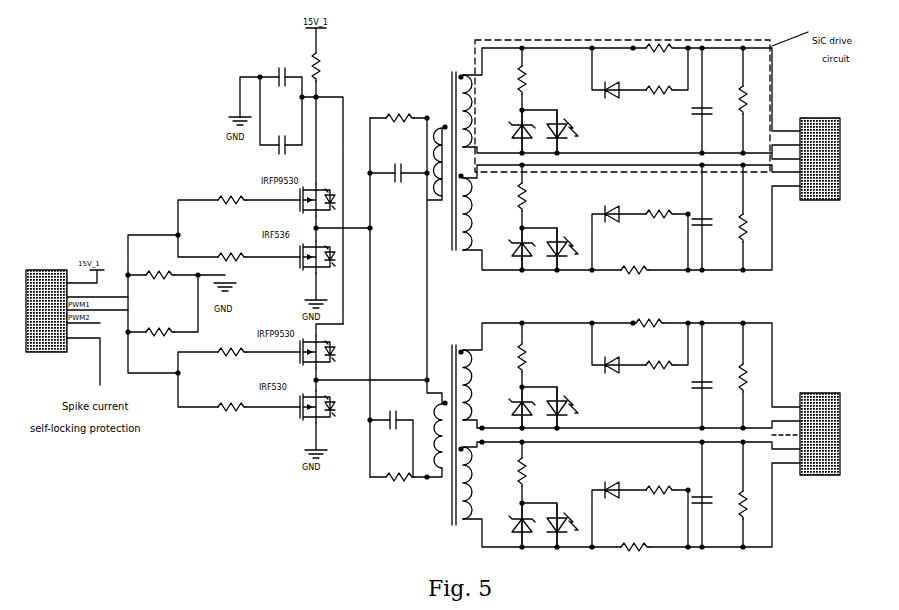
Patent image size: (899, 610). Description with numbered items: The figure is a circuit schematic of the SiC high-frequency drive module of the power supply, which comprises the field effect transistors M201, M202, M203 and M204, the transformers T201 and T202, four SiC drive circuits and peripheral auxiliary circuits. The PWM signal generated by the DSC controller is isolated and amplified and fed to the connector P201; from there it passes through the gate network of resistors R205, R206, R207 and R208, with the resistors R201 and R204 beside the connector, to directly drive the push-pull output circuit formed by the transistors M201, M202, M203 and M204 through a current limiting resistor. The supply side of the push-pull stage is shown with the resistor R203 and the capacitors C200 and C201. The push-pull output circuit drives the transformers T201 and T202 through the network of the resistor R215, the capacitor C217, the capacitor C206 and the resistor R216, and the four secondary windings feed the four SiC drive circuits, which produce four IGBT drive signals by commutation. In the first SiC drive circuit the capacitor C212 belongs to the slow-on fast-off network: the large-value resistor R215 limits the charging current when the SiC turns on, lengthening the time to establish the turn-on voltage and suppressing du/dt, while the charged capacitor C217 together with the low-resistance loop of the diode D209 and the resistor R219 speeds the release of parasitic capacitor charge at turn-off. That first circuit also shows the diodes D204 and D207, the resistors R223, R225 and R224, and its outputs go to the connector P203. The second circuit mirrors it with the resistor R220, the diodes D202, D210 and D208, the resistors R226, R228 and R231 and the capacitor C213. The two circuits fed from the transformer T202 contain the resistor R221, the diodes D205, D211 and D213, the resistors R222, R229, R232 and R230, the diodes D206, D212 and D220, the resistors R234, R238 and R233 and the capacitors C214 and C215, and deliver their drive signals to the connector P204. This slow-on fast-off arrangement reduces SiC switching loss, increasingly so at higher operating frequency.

The resistor R203 is at (327, 67).
The capacitor C200 is at (280, 69).
The electrolytic capacitor C201 is at (282, 142).
The gate resistor R205 is at (232, 195).
The gate resistor R206 is at (232, 252).
The field effect transistor M201 is at (309, 206).
The field effect transistor M202 is at (309, 260).
The resistor R201 is at (167, 270).
The resistor R204 is at (167, 327).
The gate resistor R207 is at (232, 347).
The gate resistor R208 is at (232, 402).
The field effect transistor M203 is at (309, 358).
The field effect transistor M204 is at (309, 412).
The connector P201 is at (44, 310).
The resistor R215 is at (400, 112).
The capacitor C217 is at (402, 170).
The capacitor C206 is at (390, 417).
The resistor R216 is at (397, 471).
The transformer T201 is at (454, 153).
The transformer T202 is at (454, 427).
The resistor R219 is at (533, 80).
The zener diode D204 is at (511, 131).
The diode D209 is at (567, 131).
The resistor R220 is at (533, 197).
The zener diode D202 is at (511, 249).
The transient voltage suppressor diode D210 is at (567, 249).
The resistor R223 is at (659, 42).
The diode D207 is at (613, 83).
The resistor R225 is at (660, 85).
The capacitor C212 is at (710, 104).
The resistor R224 is at (754, 100).
The diode D208 is at (613, 207).
The resistor R226 is at (660, 209).
The resistor R228 is at (634, 265).
The capacitor C213 is at (710, 215).
The resistor R231 is at (754, 228).
The output header connector P203 is at (820, 158).
The resistor R221 is at (533, 358).
The zener diode D205 is at (509, 408).
The transient voltage suppressor diode D211 is at (567, 408).
The resistor R222 is at (533, 472).
The zener diode D206 is at (510, 525).
The transient voltage suppressor diode D212 is at (567, 525).
The resistor R229 is at (649, 317).
The diode D213 is at (613, 358).
The resistor R232 is at (660, 360).
The capacitor C214 is at (710, 378).
The resistor R230 is at (754, 378).
The diode D220 is at (613, 483).
The resistor R234 is at (660, 485).
The resistor R238 is at (635, 542).
The capacitor C215 is at (710, 492).
The resistor R233 is at (754, 505).
The output header connector P204 is at (820, 434).